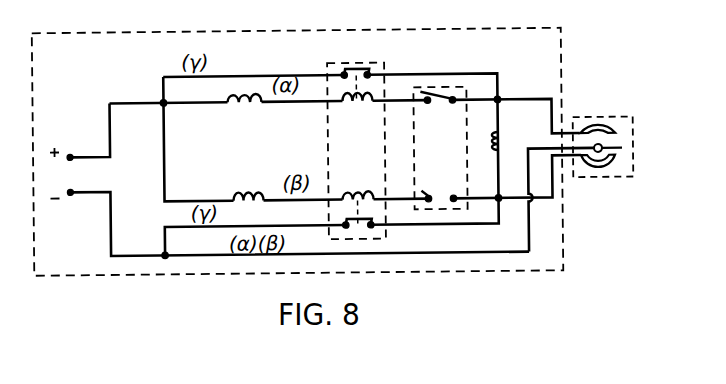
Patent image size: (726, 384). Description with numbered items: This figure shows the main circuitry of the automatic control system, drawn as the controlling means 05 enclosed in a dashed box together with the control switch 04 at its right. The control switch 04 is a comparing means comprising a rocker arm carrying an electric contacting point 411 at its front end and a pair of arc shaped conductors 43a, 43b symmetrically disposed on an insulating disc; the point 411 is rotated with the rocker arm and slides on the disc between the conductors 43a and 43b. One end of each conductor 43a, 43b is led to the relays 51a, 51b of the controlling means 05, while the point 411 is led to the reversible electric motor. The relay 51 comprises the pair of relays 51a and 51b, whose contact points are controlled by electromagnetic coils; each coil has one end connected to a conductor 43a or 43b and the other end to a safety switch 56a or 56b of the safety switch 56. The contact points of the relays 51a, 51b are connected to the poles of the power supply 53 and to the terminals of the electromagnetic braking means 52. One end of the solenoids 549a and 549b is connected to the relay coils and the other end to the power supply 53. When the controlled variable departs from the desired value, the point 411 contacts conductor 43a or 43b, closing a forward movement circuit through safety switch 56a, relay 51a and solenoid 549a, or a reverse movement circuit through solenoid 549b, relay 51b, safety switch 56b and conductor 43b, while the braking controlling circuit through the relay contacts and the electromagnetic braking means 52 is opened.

The controlling means 05 is at (447, 30).
The power supply 53 is at (285, 178).
The controlling solenoid of pilot valve 549a is at (240, 92).
The controlling solenoid of pilot valve 549b is at (255, 178).
The relay 51 is at (352, 64).
The relay 51a is at (356, 109).
The relay 51b is at (353, 191).
The safety switch 56 is at (452, 87).
The safety switch 56a is at (440, 108).
The safety switch 56b is at (436, 192).
The electromagnetic braking means 52 is at (503, 136).
The control switch 04 is at (596, 120).
The electric contacting point 411 is at (606, 168).
The arc shaped conductor 43a is at (619, 130).
The arc shaped conductor 43b is at (618, 174).